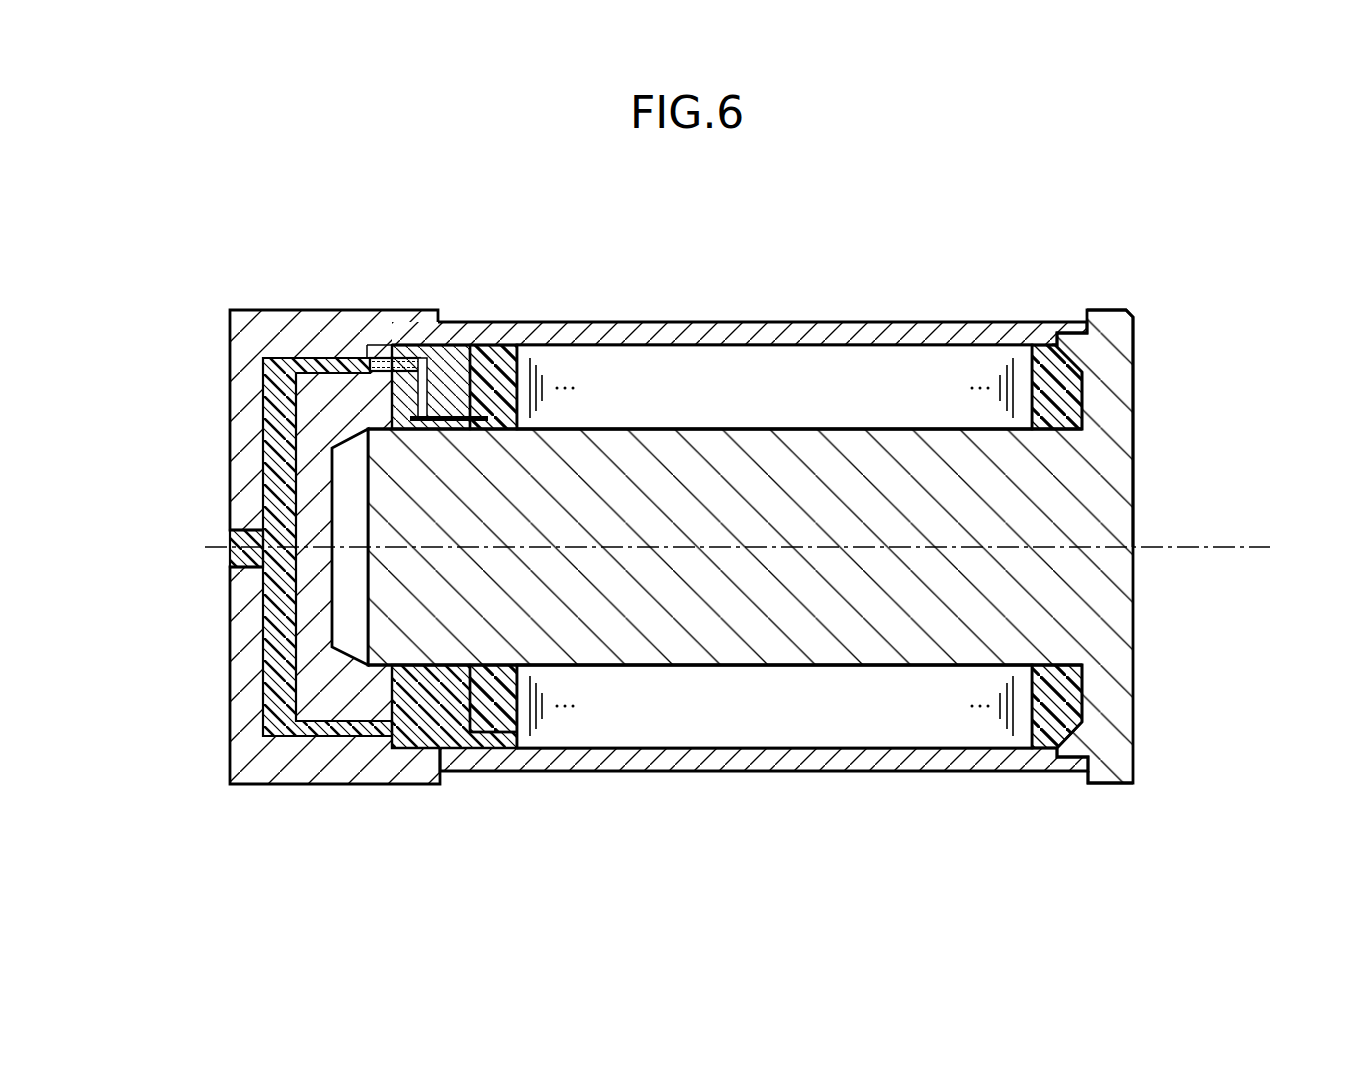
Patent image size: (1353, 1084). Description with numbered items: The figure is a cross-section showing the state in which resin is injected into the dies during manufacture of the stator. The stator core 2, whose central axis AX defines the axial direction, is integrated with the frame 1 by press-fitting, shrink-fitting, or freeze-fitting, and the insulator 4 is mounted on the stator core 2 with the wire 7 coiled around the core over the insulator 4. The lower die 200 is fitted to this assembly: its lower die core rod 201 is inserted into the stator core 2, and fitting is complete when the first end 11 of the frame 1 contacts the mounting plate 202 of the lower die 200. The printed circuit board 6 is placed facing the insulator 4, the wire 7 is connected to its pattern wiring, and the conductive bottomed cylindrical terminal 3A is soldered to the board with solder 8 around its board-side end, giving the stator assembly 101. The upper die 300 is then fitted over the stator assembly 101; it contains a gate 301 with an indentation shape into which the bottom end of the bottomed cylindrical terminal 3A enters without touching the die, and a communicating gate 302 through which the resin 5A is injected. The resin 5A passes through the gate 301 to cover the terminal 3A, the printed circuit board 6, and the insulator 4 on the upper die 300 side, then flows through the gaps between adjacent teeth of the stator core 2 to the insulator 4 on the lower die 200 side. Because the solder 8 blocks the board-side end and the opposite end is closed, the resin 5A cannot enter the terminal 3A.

The frame 1 is at (929, 332).
The stator core 2 is at (797, 372).
The bottomed cylindrical terminal 3A is at (385, 347).
The insulator 4 is at (505, 352).
The resin 5A is at (427, 748).
The printed circuit board 6 is at (462, 372).
The wire 7 is at (464, 350).
The solder 8 is at (418, 355).
The first end 11 is at (1105, 767).
The stator assembly 101 is at (664, 318).
The lower die 200 is at (1133, 728).
The lower die core rod 201 is at (880, 653).
The mounting plate 202 is at (1112, 375).
The upper die 300 is at (230, 745).
The gate 301 is at (375, 357).
The gate 302 is at (263, 418).
The central axis AX is at (1217, 548).